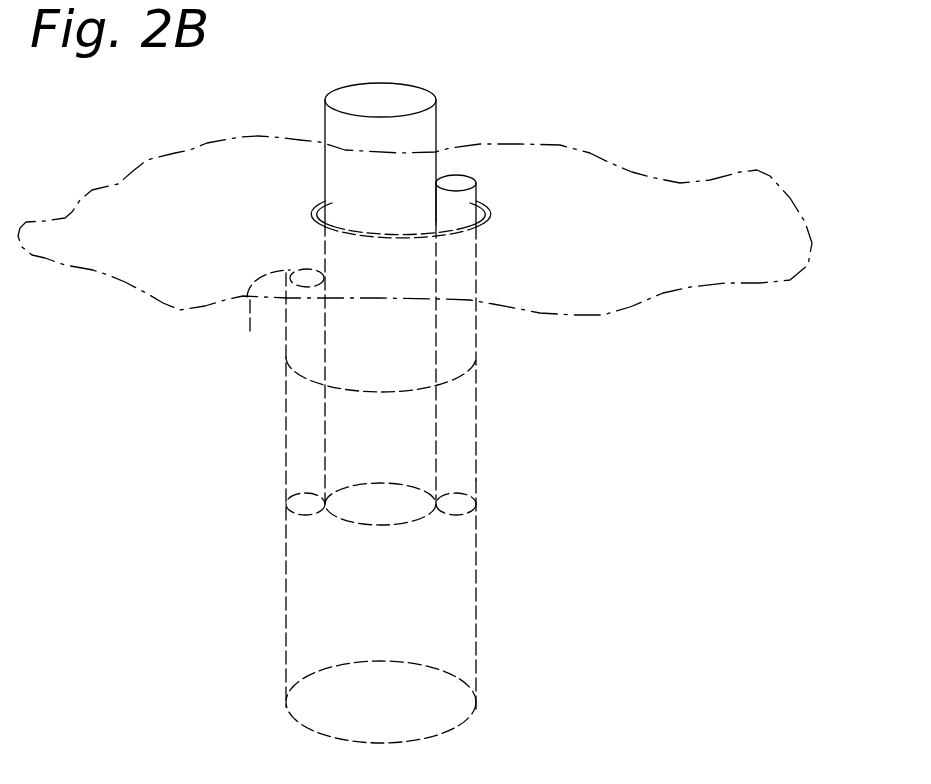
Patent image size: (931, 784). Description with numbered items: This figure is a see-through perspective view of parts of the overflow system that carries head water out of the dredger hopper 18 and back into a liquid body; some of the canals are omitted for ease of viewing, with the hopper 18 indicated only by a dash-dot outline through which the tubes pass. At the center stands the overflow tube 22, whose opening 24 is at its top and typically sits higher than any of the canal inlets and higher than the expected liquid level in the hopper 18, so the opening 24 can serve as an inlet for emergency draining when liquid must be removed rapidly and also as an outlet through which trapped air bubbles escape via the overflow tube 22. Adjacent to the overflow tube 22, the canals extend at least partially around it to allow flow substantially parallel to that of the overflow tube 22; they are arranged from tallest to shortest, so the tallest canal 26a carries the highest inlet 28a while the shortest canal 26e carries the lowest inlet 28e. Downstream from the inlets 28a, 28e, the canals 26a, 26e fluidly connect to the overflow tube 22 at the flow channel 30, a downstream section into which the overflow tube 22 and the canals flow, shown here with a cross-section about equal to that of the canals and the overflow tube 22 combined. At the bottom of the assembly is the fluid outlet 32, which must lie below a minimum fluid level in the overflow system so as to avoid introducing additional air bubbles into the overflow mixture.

The dredger hopper 18 is at (615, 200).
The overflow tube 22 is at (341, 122).
The opening 24 is at (400, 77).
The canal 26a is at (460, 335).
The canal 26e is at (306, 441).
The inlet 28a is at (458, 182).
The inlet 28e is at (249, 333).
The flow channel 30 is at (433, 606).
The fluid outlet 32 is at (450, 733).